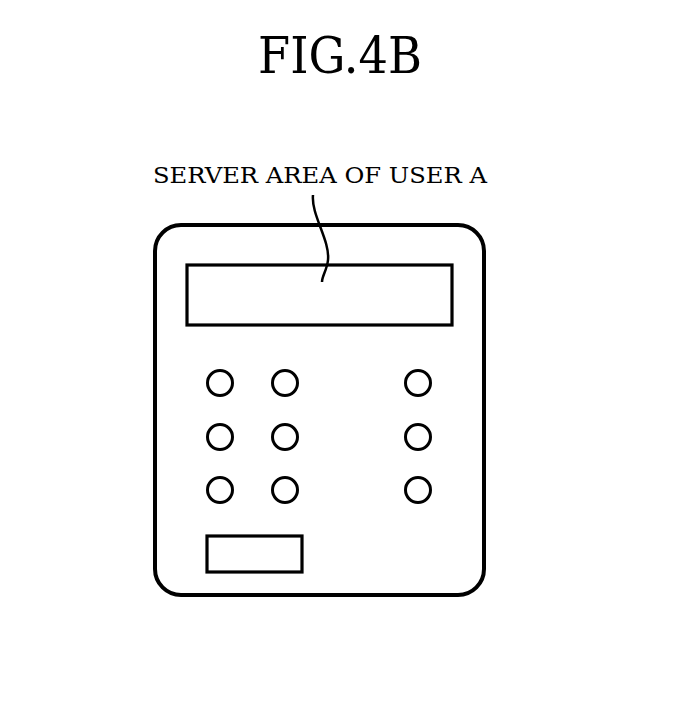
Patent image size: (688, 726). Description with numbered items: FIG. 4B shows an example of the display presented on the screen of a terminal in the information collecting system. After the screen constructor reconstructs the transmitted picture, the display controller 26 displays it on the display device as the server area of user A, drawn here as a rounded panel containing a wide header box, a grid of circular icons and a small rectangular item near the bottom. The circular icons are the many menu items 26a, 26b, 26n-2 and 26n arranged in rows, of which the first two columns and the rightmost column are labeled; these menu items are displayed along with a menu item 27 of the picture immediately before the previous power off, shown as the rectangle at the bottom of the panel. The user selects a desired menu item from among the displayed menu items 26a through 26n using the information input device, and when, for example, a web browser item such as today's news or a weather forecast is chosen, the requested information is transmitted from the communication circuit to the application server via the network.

The display controller 26 is at (485, 307).
The menu item 26a is at (207, 384).
The menu item 26b is at (207, 438).
The menu item 26n-2 is at (431, 383).
The menu item 26n is at (431, 490).
The menu item of the picture immediately before the previous power off 27 is at (247, 572).